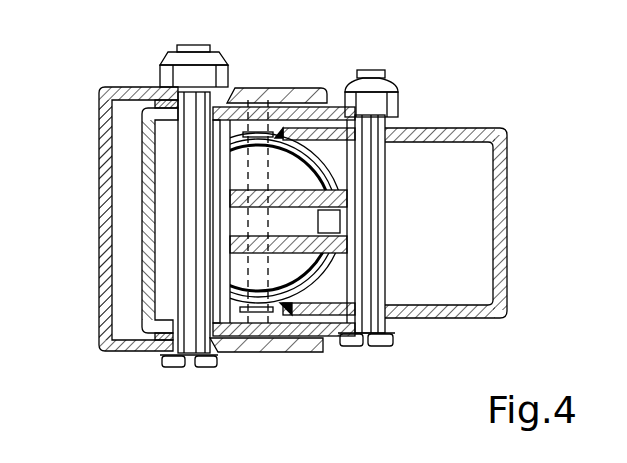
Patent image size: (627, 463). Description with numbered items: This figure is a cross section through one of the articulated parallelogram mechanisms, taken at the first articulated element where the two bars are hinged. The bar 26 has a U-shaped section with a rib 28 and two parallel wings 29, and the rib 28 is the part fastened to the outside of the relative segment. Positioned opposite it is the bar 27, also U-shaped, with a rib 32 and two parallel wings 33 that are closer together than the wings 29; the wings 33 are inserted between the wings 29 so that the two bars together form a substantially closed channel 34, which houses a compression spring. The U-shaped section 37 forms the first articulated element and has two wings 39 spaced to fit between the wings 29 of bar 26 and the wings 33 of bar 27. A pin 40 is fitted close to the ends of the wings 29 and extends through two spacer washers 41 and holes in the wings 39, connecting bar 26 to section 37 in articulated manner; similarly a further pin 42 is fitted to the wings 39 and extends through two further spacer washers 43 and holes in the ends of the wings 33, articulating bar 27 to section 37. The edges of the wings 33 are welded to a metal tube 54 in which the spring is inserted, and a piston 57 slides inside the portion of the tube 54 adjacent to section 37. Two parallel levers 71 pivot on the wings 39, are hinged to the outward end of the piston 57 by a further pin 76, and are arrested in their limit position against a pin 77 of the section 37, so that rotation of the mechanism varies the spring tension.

The bar 26 is at (99, 298).
The bar 27 is at (507, 260).
The rib 28 is at (105, 170).
The wings 29 is at (272, 92).
The rib 32 is at (508, 185).
The wings 33 is at (458, 130).
The channel 34 is at (423, 160).
The U-shaped section 37 is at (140, 234).
The wings 39 is at (330, 105).
The pin 40 is at (188, 145).
The spacer washers 41 is at (163, 100).
The pin 42 is at (373, 292).
The spacer washers 43 is at (397, 122).
The metal tube 54 is at (340, 174).
The piston 57 is at (282, 270).
The levers 71 is at (330, 248).
The pin 76 is at (248, 100).
The pin 77 is at (220, 308).